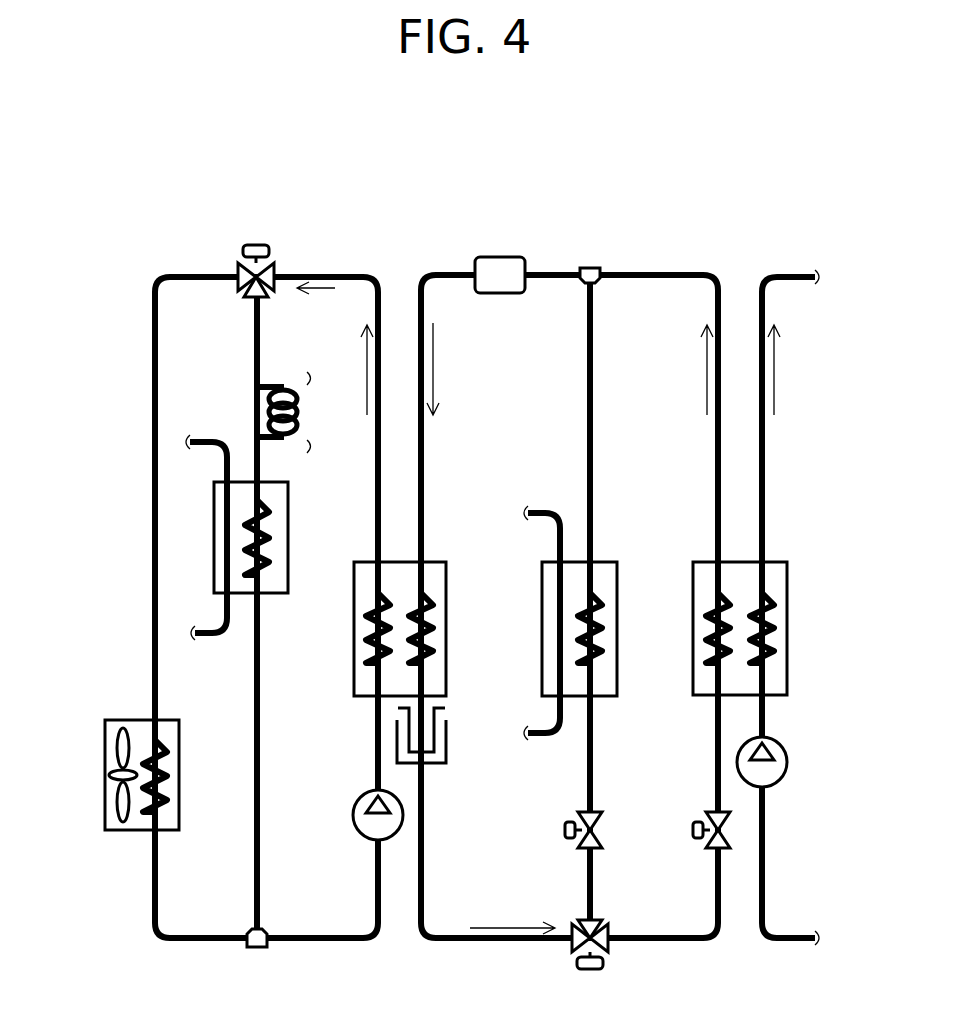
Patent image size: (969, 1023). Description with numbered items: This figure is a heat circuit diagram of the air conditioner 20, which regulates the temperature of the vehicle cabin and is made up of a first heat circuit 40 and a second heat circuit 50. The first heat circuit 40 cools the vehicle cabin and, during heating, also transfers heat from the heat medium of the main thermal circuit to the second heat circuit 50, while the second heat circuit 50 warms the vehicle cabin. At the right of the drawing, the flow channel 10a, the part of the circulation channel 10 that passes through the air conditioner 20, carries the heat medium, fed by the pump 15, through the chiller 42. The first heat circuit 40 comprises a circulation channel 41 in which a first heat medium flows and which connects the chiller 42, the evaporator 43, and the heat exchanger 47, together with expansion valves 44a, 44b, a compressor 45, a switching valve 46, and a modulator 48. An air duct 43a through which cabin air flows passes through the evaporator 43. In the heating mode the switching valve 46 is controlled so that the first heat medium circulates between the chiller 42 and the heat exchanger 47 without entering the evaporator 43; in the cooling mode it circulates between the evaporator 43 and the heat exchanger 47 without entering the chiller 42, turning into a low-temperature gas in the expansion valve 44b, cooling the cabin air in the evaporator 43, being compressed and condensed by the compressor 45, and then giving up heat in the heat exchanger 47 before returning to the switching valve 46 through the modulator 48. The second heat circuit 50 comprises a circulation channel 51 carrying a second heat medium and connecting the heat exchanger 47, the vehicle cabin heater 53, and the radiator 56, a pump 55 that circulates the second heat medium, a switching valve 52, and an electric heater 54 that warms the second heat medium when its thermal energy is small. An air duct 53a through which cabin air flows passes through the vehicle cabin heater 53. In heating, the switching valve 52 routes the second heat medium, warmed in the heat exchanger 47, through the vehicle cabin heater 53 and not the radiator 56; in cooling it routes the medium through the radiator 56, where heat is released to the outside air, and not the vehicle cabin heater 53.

The air conditioner 20 is at (148, 172).
The second heat circuit 50 is at (370, 255).
The circulation channel 51 is at (325, 275).
The switching valve 52 is at (238, 262).
The vehicle cabin heater 53 is at (288, 505).
The air duct 53a is at (208, 634).
The electric heater 54 is at (283, 387).
The pump 55 is at (365, 840).
The radiator 56 is at (170, 830).
The first heat circuit 40 is at (688, 240).
The circulation channel 41 is at (640, 275).
The chiller 42 is at (782, 562).
The evaporator 43 is at (610, 562).
The air duct 43a is at (557, 543).
The expansion valve 44a is at (703, 848).
The expansion valve 44b is at (575, 848).
The compressor 45 is at (498, 293).
The switching valve 46 is at (612, 928).
The heat exchanger 47 is at (440, 562).
The modulator 48 is at (448, 752).
The flow channel 10a is at (792, 275).
The circulation channel 10 is at (803, 581).
The pump 15 is at (775, 780).